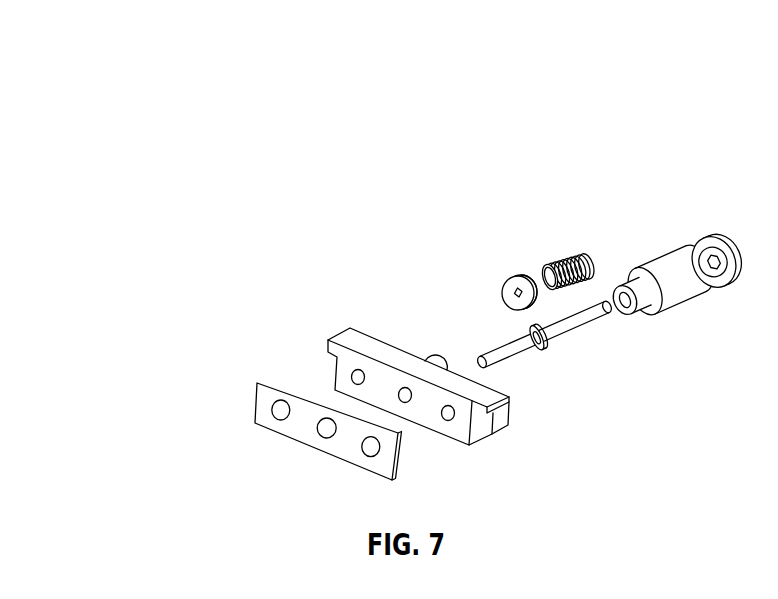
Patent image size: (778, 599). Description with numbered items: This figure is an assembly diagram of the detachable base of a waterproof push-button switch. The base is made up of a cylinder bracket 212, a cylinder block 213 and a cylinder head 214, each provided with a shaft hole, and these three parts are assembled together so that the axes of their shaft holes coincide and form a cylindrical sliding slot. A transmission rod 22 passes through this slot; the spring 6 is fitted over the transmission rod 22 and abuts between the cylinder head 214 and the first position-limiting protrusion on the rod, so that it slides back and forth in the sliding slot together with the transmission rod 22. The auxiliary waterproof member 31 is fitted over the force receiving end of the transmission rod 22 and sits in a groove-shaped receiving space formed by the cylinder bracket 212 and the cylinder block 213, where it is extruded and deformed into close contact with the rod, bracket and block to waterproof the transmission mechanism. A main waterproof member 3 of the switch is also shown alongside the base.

The main waterproof member 3 is at (232, 380).
The cylinder bracket 212 is at (273, 334).
The transmission rod 22 is at (329, 271).
The auxiliary waterproof member 31 is at (452, 246).
The spring 6 is at (487, 208).
The cylinder block 213 is at (532, 193).
The cylinder head 214 is at (550, 154).